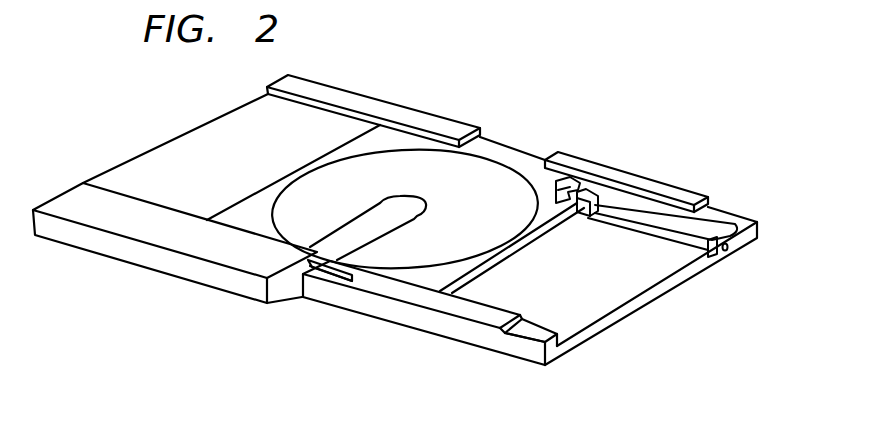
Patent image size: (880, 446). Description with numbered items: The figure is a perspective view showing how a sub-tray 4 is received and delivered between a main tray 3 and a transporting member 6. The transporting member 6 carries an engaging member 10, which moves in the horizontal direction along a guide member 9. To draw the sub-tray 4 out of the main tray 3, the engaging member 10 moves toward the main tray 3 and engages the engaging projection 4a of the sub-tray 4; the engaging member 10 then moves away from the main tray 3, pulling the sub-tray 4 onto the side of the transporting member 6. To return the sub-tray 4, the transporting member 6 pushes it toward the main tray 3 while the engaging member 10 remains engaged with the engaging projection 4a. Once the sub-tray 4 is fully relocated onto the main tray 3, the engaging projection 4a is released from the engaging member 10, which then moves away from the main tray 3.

The main tray 3 is at (162, 264).
The sub-tray 4 is at (488, 167).
The engaging projection 4a is at (577, 182).
The transporting member 6 is at (474, 336).
The guide member 9 is at (713, 227).
The engaging member 10 is at (593, 173).